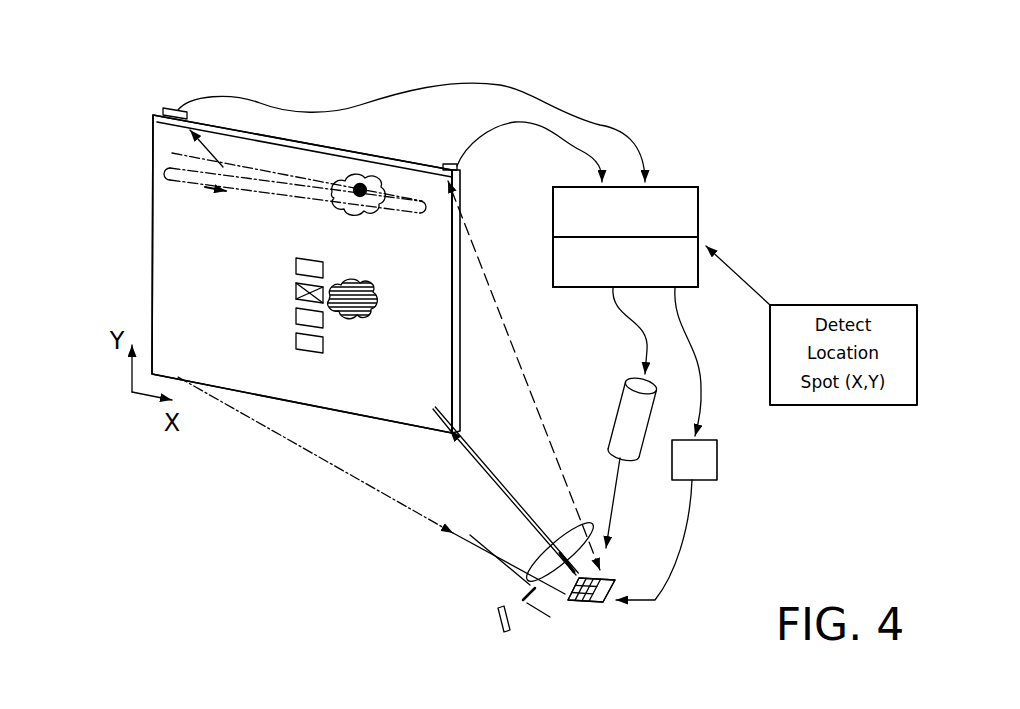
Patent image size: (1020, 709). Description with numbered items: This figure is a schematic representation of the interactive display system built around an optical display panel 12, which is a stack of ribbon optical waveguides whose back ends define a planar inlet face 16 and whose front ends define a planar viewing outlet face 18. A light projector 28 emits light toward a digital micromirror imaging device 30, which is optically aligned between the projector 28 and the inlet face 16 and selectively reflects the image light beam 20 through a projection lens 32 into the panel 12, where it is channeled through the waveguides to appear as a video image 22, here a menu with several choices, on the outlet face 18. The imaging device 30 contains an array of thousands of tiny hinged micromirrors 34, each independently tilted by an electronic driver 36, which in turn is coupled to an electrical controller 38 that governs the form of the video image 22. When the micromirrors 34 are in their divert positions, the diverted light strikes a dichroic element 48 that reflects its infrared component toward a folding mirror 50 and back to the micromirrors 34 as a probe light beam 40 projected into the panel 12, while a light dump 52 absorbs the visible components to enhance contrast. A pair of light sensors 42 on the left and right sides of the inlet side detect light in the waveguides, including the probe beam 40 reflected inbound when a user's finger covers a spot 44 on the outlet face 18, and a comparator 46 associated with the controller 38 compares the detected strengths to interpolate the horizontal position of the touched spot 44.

The optical display panel 12 is at (138, 186).
The inlet face 16 is at (397, 157).
The outlet face 18 is at (388, 388).
The image light beam 20 is at (487, 470).
The video image 22 is at (190, 243).
The light projector 28 is at (620, 417).
The digital micromirror imaging device 30 is at (590, 603).
The projection lens 32 is at (530, 550).
The micromirrors 34 is at (573, 603).
The electronic driver 36 is at (718, 460).
The electrical controller 38 is at (638, 275).
The probe light beam 40 is at (355, 176).
The light sensor 42 is at (178, 108).
The spot 44 is at (325, 283).
The comparator 46 is at (699, 210).
The dichroic element 48 is at (539, 618).
The folding mirror 50 is at (522, 596).
The light dump 52 is at (497, 620).